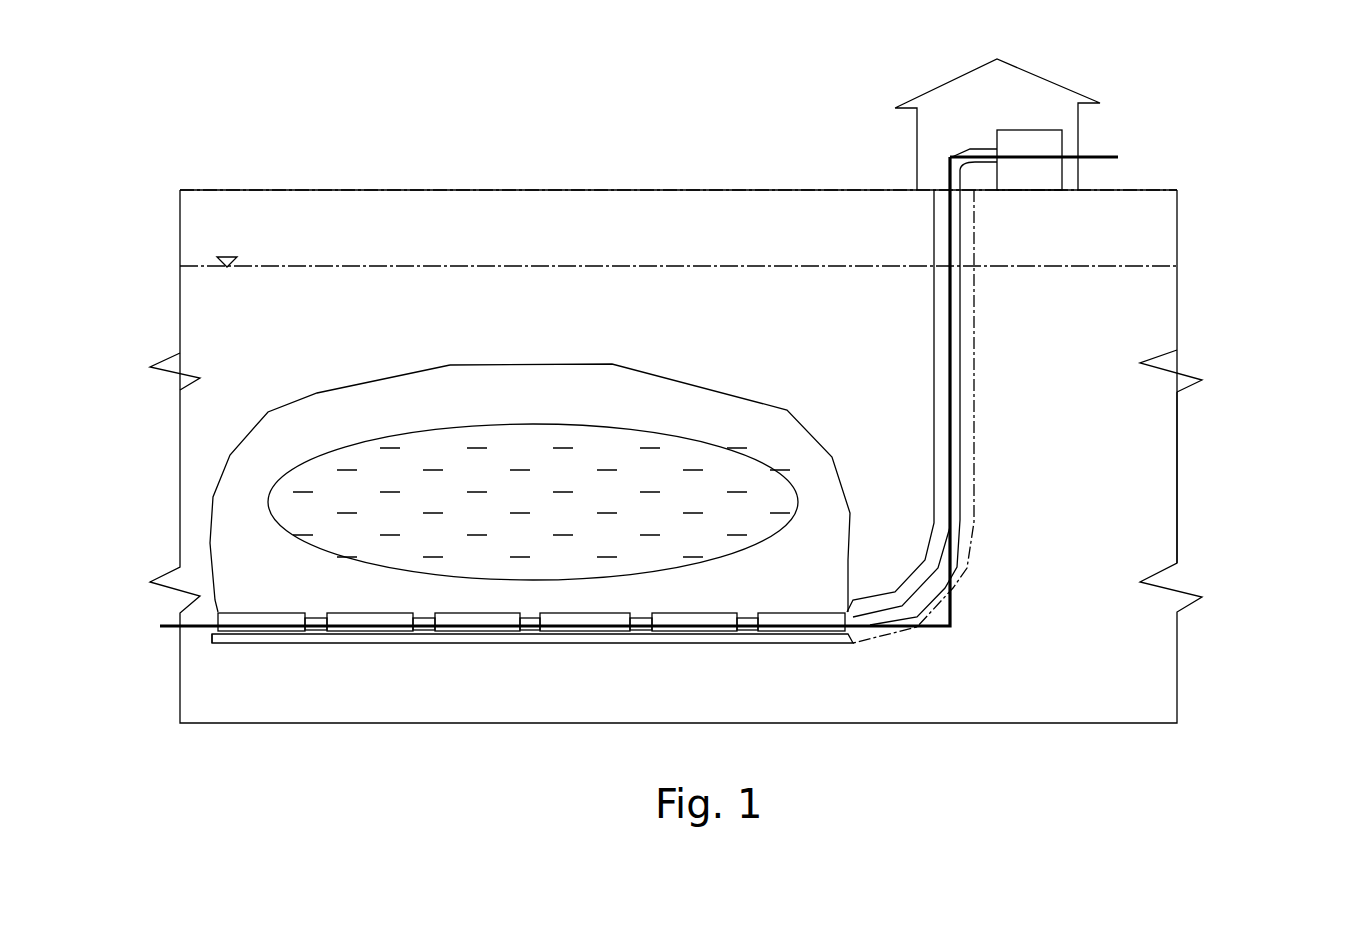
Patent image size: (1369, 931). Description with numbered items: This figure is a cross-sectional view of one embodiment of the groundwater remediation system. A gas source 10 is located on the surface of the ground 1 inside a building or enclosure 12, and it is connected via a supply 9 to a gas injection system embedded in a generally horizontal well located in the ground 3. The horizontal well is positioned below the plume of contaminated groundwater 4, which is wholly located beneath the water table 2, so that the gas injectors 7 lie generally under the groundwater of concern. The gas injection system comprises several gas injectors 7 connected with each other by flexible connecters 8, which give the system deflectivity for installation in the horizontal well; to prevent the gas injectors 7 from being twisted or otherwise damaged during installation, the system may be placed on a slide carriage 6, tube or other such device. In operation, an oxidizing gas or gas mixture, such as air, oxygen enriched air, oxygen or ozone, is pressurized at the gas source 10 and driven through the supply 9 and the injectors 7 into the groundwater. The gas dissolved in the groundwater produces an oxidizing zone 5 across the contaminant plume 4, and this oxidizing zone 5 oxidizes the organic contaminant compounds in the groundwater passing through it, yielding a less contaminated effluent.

The surface of the ground 1 is at (270, 190).
The water table 2 is at (265, 267).
The ground 3 is at (1122, 317).
The plume of contaminated groundwater 4 is at (702, 475).
The oxidizing zone 5 is at (827, 503).
The slide carriage 6 is at (205, 630).
The gas injectors 7 is at (265, 636).
The flexible connecters 8 is at (316, 612).
The supply 9 is at (950, 170).
The gas source 10 is at (1048, 150).
The building or enclosure 12 is at (1048, 78).